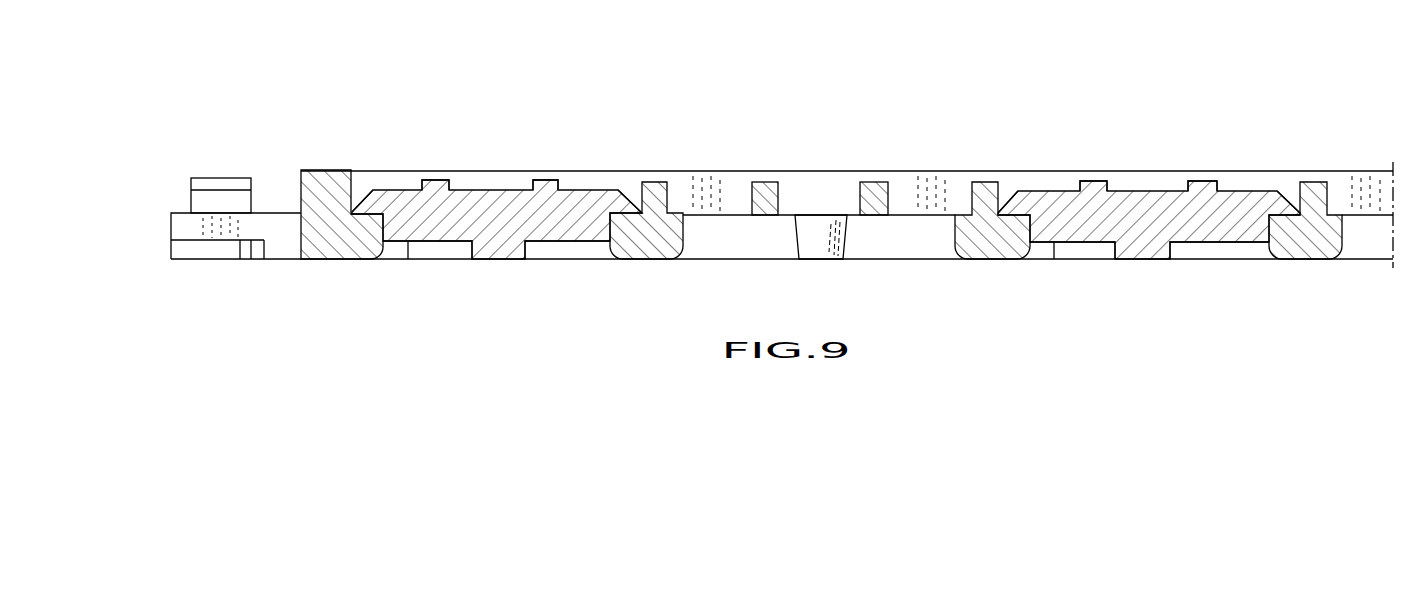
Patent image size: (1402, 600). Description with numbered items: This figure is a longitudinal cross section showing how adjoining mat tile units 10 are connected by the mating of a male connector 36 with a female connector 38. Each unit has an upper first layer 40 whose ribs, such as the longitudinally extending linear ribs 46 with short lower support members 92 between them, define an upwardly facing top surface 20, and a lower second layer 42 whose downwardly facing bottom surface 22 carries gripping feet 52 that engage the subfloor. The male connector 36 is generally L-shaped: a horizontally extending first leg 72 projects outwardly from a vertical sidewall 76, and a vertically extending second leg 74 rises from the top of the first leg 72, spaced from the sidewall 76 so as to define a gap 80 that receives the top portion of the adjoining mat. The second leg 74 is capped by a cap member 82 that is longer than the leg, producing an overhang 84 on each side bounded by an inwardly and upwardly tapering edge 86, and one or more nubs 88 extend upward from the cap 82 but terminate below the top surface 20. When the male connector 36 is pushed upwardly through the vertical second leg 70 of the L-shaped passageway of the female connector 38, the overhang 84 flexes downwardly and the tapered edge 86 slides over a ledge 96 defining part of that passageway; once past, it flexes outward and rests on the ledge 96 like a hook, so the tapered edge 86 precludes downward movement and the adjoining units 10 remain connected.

The mat tile unit 10 is at (912, 160).
The upwardly facing top surface 20 is at (847, 139).
The downwardly facing bottom surface 22 is at (782, 248).
The male connector 36 is at (660, 213).
The female connector 38 is at (826, 162).
The upper first layer 40 is at (722, 168).
The lower second layer 42 is at (872, 263).
The longitudinally extending linear rib 46 is at (816, 171).
The gripping foot 52 is at (816, 254).
The second leg of L-shaped passageway 70 is at (399, 177).
The first horizontal leg 72 is at (219, 262).
The second vertical leg 74 is at (703, 142).
The vertical sidewall 76 is at (271, 205).
The gap 80 is at (275, 243).
The cap member 82 is at (182, 198).
The overhang 84 is at (404, 259).
The tapered edge 86 is at (206, 198).
The nub 88 is at (227, 180).
The lower support member 92 is at (764, 181).
The ledge 96 is at (318, 171).